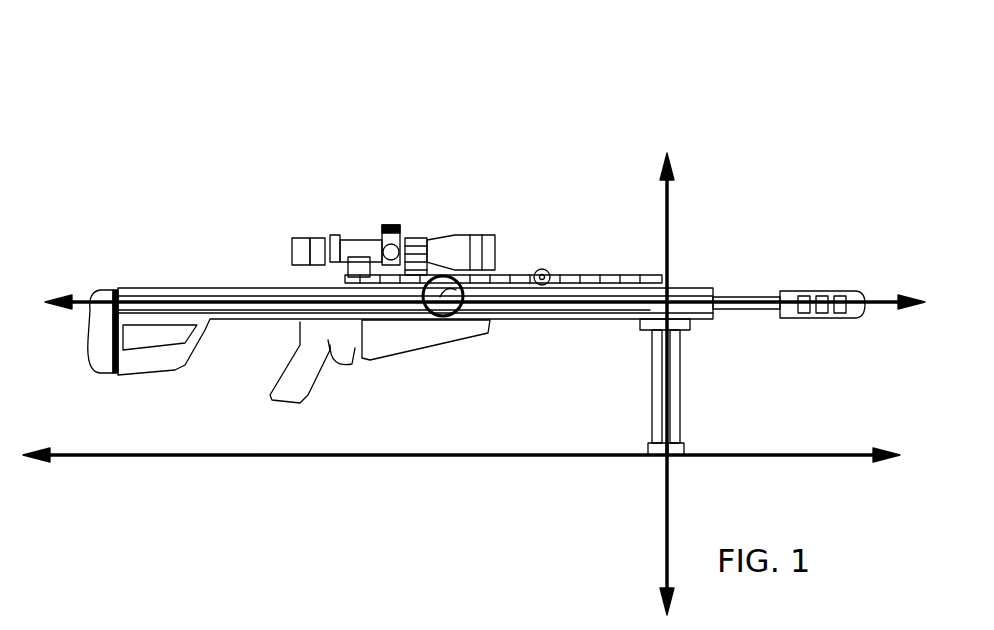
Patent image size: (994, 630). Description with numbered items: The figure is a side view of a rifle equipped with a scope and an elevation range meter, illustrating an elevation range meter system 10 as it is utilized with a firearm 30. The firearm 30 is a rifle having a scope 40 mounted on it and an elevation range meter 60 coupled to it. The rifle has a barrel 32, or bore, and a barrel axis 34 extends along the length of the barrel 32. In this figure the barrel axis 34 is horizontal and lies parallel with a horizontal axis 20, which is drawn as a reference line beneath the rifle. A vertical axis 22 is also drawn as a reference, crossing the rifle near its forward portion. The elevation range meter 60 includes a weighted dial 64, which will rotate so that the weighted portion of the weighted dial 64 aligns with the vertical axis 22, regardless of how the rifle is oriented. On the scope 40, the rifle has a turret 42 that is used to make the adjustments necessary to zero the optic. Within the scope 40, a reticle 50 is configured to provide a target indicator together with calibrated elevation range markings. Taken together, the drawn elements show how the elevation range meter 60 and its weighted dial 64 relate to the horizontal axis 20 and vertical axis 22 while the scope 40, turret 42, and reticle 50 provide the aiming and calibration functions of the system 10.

The elevation range meter system 10 is at (526, 150).
The horizontal axis 20 is at (543, 458).
The vertical axis 22 is at (672, 180).
The firearm 30 is at (175, 292).
The barrel 32 is at (770, 298).
The barrel axis 34 is at (893, 297).
The scope 40 is at (300, 245).
The turret 42 is at (398, 222).
The reticle 50 is at (440, 250).
The elevation range meter 60 is at (463, 313).
The weighted dial 64 is at (438, 314).